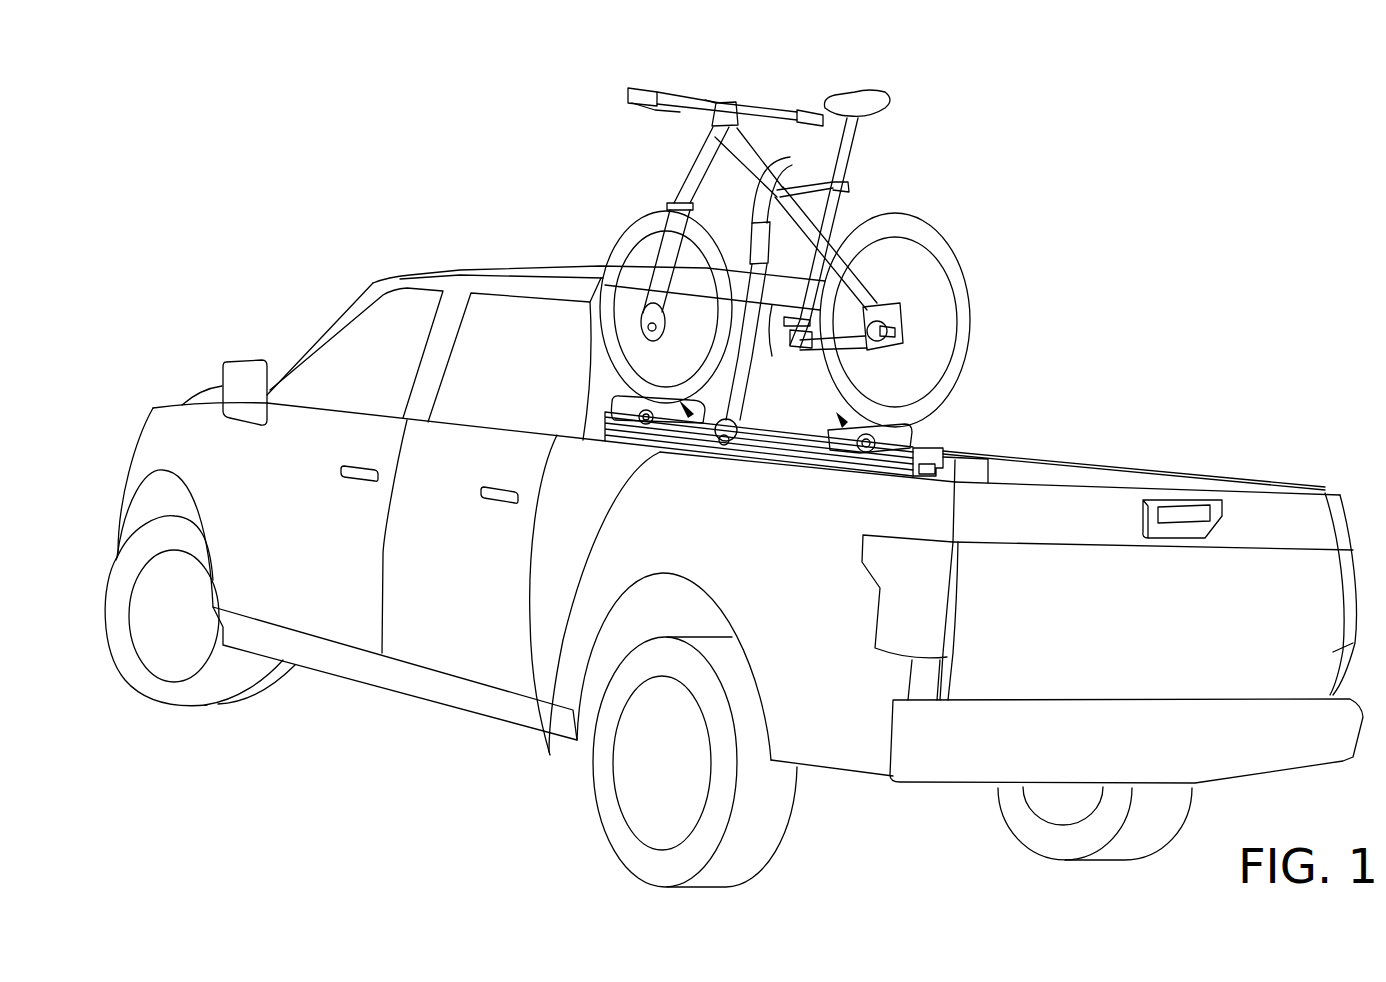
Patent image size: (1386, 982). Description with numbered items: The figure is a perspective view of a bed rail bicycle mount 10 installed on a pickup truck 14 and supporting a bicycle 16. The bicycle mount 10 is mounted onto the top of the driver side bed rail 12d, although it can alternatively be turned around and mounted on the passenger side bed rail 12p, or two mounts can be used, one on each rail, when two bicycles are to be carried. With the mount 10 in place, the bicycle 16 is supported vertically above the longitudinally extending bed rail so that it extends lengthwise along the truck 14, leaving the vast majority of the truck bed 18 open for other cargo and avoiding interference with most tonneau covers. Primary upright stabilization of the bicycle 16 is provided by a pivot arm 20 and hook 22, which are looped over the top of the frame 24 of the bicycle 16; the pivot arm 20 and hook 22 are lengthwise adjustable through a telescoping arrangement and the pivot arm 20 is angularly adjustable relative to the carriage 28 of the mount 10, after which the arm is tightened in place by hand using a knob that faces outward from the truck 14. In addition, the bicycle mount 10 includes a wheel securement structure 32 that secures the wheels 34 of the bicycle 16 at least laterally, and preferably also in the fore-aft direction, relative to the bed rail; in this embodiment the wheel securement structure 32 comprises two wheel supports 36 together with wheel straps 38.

The bicycle mount 10 is at (938, 446).
The driver side bed rail 12d is at (550, 755).
The passenger side bed rail 12p is at (1170, 477).
The pickup truck 14 is at (457, 175).
The bicycle 16 is at (843, 162).
The truck bed 18 is at (1033, 470).
The pivot arm 20 is at (737, 403).
The hook 22 is at (813, 322).
The frame 24 is at (847, 201).
The carriage 28 is at (944, 445).
The wheel securement structure 32 is at (846, 436).
The wheels 34 is at (637, 230).
The wheel supports 36 is at (870, 460).
The wheel straps 38 is at (838, 434).